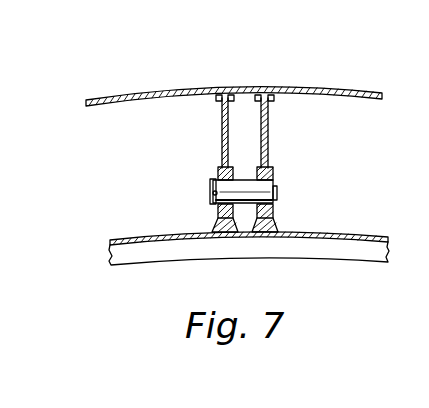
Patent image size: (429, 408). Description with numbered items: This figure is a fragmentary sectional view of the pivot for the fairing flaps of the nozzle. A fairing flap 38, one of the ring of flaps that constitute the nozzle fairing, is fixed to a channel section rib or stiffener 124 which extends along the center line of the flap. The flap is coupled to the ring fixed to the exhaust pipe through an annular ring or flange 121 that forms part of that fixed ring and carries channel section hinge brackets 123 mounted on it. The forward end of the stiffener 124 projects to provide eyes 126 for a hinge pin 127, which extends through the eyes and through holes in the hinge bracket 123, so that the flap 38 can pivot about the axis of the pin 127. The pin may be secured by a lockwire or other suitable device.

The fairing flap 38 is at (332, 91).
The annular ring or flange 121 is at (320, 234).
The channel section hinge bracket 123 is at (247, 232).
The channel section rib or stiffener 124 is at (270, 138).
The eye 126 is at (276, 183).
The hinge pin 127 is at (210, 183).